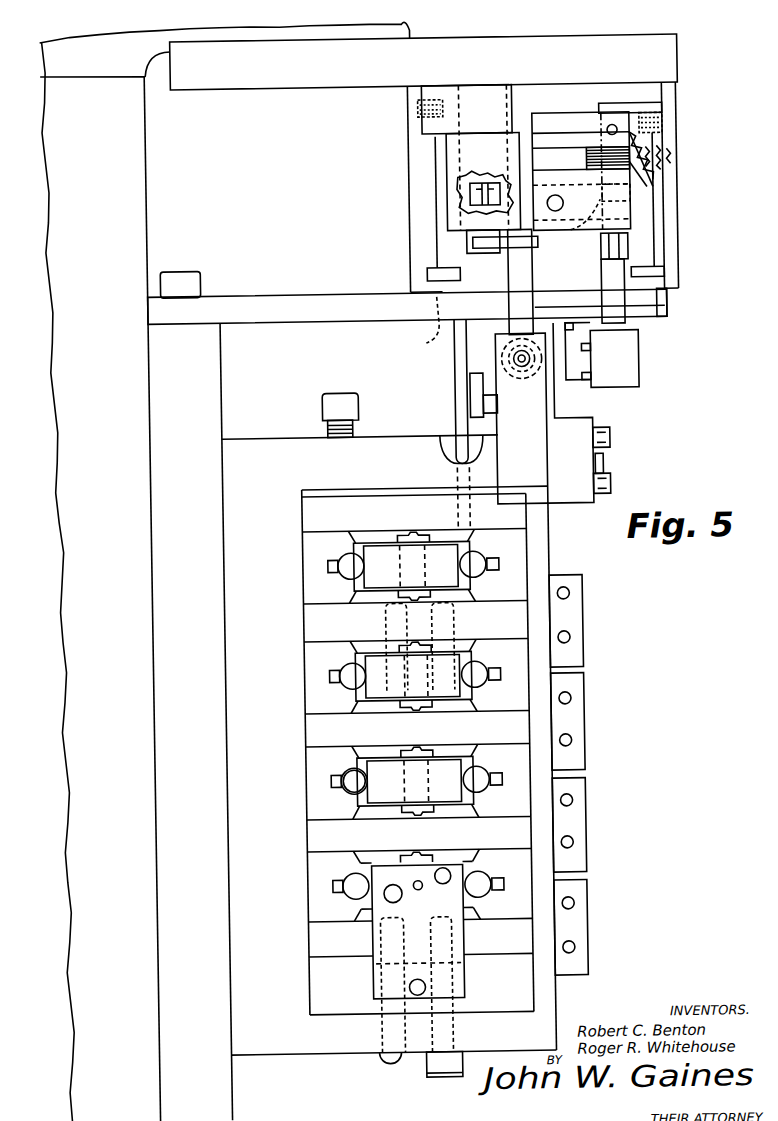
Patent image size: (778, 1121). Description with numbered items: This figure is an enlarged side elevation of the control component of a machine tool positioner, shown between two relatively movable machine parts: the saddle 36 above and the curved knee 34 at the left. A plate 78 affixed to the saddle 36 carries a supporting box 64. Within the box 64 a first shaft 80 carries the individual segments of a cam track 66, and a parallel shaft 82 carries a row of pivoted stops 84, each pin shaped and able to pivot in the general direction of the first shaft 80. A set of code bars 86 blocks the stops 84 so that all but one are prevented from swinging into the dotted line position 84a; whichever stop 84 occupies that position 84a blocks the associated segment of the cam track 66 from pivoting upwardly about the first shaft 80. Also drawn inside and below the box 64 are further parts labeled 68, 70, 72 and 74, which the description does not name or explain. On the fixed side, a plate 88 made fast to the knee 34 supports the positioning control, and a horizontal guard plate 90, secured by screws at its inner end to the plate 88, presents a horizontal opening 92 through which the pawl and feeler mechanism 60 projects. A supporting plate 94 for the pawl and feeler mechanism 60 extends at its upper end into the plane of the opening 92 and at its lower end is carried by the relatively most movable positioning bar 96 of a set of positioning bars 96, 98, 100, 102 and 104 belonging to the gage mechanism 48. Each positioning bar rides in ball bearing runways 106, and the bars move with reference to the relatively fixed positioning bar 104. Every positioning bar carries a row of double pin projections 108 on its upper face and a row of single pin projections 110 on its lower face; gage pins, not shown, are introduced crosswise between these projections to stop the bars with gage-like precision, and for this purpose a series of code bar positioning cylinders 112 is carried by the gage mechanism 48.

The curved knee 34 is at (78, 168).
The saddle 36 is at (107, 45).
The gage mechanism 48 is at (540, 1000).
The pawl and feeler mechanism 60 is at (570, 392).
The supporting box 64 is at (677, 254).
The cam track 66 is at (635, 217).
The latch member 68 is at (468, 203).
The rod 70 is at (534, 285).
The spring post 72 is at (620, 258).
The switch 74 is at (635, 369).
The plate 78 is at (688, 52).
The first shaft 80 is at (563, 198).
The parallel shaft 82 is at (662, 147).
The pivoted stops 84 is at (638, 206).
The dotted line position 84a is at (587, 219).
The code bars 86 is at (655, 184).
The plate 88 is at (162, 692).
The horizontal guard plate 90 is at (308, 313).
The horizontal opening 92 is at (446, 335).
The supporting plate 94 is at (465, 364).
The positioning bar 96 is at (440, 552).
The positioning bar 98 is at (451, 661).
The positioning bar 100 is at (450, 764).
The positioning bar 102 is at (451, 876).
The positioning bar 104 is at (369, 966).
The ball bearing runways 106 is at (354, 782).
The double pin projections 108 is at (399, 629).
The single pin projections 110 is at (387, 611).
The code bar positioning cylinders 112 is at (578, 660).